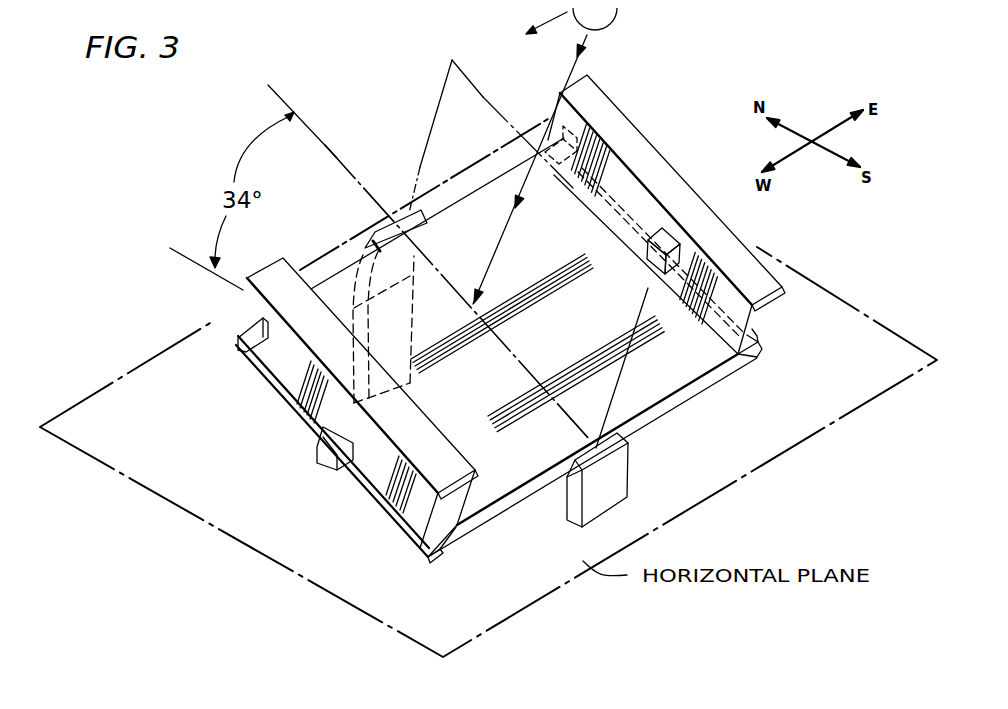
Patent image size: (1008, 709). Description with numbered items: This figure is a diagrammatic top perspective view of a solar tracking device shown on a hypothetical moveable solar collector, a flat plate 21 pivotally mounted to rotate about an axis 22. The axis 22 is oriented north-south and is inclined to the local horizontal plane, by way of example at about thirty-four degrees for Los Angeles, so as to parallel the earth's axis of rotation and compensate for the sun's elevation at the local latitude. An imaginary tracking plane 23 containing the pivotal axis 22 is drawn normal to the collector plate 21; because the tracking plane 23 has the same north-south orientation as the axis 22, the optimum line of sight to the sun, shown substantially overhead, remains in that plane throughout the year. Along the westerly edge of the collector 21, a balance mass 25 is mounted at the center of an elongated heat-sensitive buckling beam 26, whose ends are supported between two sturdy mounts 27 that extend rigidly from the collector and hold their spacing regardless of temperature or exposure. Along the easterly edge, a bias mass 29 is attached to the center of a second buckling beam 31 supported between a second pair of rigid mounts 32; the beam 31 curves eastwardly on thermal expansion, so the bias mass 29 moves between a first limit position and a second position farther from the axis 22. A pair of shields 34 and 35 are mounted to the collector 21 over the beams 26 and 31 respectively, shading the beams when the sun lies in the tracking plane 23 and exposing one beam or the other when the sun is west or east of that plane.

The flat plate 21 is at (590, 326).
The axis 22 is at (615, 465).
The tracking plane 23 is at (440, 108).
The balance mass 25 is at (330, 460).
The buckling beam 26 is at (307, 421).
The mounts 27 is at (247, 326).
The bias mass 29 is at (674, 236).
The second buckling beam 31 is at (745, 340).
The second pair of rigid mounts 32 is at (548, 122).
The shield 34 is at (278, 264).
The shield 35 is at (640, 128).